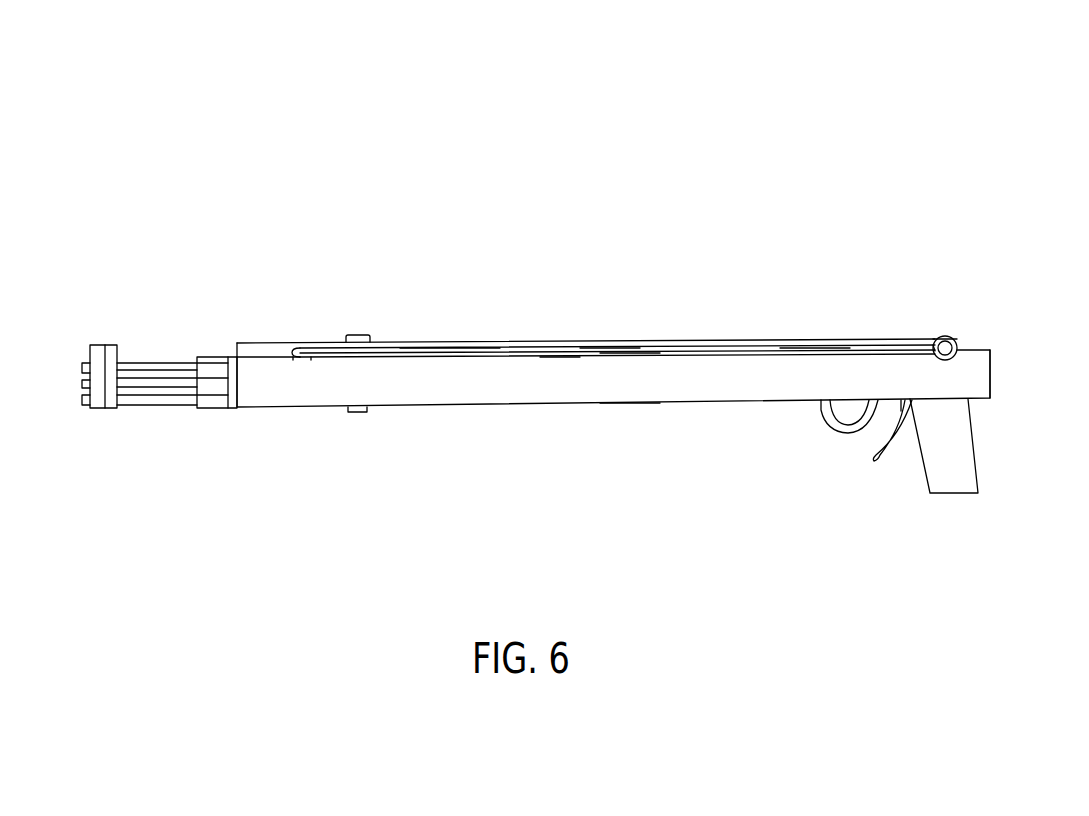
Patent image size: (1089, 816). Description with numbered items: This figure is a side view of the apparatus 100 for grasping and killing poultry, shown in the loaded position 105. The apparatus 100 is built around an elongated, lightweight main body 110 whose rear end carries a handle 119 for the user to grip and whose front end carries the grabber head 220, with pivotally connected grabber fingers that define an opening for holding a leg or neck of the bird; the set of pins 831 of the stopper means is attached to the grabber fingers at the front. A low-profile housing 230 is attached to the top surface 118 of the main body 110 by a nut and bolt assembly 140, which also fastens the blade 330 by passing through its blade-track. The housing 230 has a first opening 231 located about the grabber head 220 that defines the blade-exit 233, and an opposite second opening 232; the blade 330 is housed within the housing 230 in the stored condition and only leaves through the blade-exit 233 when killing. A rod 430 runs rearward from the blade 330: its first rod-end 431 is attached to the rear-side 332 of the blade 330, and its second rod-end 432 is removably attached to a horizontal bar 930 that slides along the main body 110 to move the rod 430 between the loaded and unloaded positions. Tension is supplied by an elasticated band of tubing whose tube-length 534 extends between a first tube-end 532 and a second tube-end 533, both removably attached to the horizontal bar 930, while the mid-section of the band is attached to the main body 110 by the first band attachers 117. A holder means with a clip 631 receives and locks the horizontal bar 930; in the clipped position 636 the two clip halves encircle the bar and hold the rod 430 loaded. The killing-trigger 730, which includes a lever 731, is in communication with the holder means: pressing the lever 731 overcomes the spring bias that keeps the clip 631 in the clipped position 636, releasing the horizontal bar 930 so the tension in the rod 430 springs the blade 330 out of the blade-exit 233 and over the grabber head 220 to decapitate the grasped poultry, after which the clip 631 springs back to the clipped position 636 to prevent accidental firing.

The apparatus 100 is at (945, 128).
The loaded position 105 is at (965, 155).
The main body 110 is at (471, 390).
The first band attachers 117 is at (293, 357).
The top surface 118 is at (272, 355).
The handle 119 is at (968, 455).
The nut and bolt assembly 140 is at (359, 334).
The grabber head 220 is at (148, 357).
The housing 230 is at (548, 340).
The first opening 231 is at (237, 355).
The second opening 232 is at (620, 349).
The blade-exit 233 is at (237, 352).
The blade 330 is at (443, 341).
The rear-side 332 is at (612, 343).
The rod 430 is at (810, 340).
The first rod-end 431 is at (628, 355).
The second rod-end 432 is at (982, 355).
The first tube-end 532 is at (334, 363).
The second tube-end 533 is at (935, 345).
The tube-length 534 is at (557, 358).
The clip 631 is at (952, 338).
The clipped position 636 is at (922, 262).
The killing-trigger 730 is at (848, 425).
The lever 731 is at (830, 412).
The set of pins 831 is at (96, 347).
The horizontal bar 930 is at (935, 346).